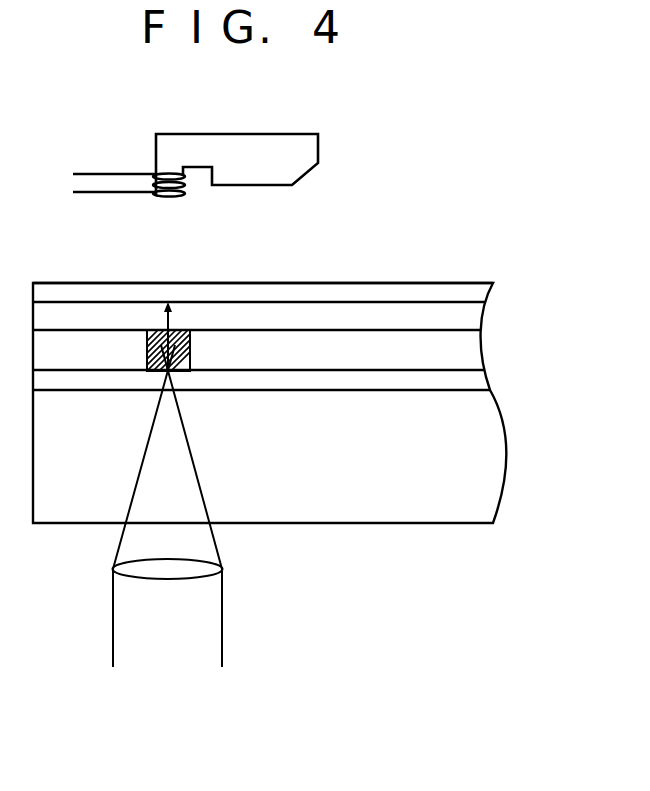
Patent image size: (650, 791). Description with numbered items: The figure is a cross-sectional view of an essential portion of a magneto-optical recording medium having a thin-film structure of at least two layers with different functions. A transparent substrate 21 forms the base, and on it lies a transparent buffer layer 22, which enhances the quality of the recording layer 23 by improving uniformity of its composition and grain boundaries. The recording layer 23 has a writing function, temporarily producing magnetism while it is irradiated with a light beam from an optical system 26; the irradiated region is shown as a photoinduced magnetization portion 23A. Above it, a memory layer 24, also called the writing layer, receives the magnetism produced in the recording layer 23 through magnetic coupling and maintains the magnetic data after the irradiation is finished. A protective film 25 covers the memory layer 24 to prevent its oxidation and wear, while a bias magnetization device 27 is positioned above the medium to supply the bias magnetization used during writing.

The transparent substrate 21 is at (495, 440).
The transparent buffer layer 22 is at (479, 386).
The recording layer 23 is at (473, 355).
The photoinduced magnetization portion 23A is at (178, 345).
The memory layer 24 is at (469, 320).
The protective film 25 is at (477, 297).
The optical system 26 is at (223, 567).
The bias magnetization device 27 is at (308, 165).